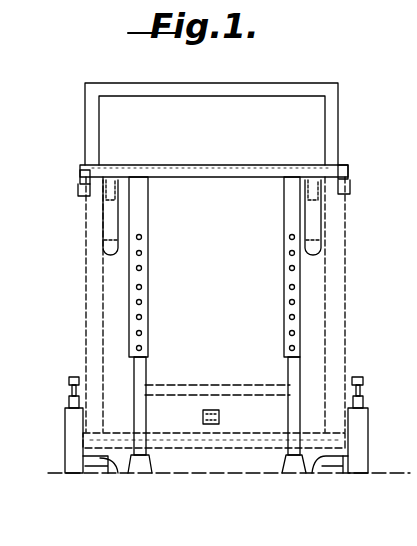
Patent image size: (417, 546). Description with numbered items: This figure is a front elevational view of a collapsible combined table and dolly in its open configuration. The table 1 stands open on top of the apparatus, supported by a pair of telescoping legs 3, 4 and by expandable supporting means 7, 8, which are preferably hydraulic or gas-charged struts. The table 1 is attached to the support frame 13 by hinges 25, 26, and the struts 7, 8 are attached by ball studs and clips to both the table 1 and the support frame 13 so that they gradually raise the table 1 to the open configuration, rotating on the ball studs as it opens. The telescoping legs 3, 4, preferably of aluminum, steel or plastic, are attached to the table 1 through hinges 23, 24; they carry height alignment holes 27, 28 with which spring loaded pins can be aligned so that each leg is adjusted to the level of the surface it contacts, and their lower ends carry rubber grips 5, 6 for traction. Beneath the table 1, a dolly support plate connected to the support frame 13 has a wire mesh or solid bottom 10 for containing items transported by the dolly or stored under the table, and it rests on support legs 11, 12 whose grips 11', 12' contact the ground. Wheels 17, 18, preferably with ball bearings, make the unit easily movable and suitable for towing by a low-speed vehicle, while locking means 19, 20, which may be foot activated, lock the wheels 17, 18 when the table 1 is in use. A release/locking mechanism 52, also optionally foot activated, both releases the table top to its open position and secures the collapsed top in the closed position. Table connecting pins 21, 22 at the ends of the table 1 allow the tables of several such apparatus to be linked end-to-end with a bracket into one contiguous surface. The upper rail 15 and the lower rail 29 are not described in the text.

The table 1 is at (148, 165).
The telescoping leg 3 is at (289, 377).
The telescoping leg 4 is at (147, 372).
The grip 5 is at (288, 460).
The grip 6 is at (156, 462).
The expandable supporting means 7 is at (321, 228).
The expandable supporting means 8 is at (108, 228).
The wire mesh bottom 10 is at (220, 449).
The support leg 11 is at (319, 488).
The grip 11' is at (364, 488).
The support leg 12 is at (119, 489).
The grip 12' is at (80, 488).
The support frame 13 is at (346, 298).
The upper frame 15 is at (92, 88).
The wheel 17 is at (368, 430).
The wheel 18 is at (69, 434).
The locking means 19 is at (364, 386).
The locking means 20 is at (69, 382).
The table connecting pin 21 is at (343, 172).
The table connecting pin 22 is at (80, 176).
The hinge 23 is at (283, 196).
The hinge 24 is at (150, 200).
The hinge 25 is at (348, 188).
The hinge 26 is at (78, 190).
The height alignment holes 27 is at (290, 302).
The height alignment holes 28 is at (144, 302).
The rails 29 is at (222, 385).
The release/locking mechanism 52 is at (220, 414).